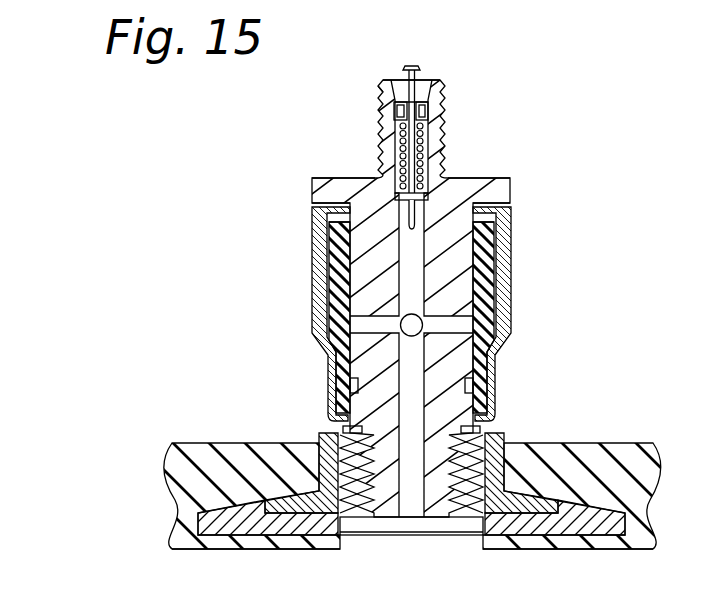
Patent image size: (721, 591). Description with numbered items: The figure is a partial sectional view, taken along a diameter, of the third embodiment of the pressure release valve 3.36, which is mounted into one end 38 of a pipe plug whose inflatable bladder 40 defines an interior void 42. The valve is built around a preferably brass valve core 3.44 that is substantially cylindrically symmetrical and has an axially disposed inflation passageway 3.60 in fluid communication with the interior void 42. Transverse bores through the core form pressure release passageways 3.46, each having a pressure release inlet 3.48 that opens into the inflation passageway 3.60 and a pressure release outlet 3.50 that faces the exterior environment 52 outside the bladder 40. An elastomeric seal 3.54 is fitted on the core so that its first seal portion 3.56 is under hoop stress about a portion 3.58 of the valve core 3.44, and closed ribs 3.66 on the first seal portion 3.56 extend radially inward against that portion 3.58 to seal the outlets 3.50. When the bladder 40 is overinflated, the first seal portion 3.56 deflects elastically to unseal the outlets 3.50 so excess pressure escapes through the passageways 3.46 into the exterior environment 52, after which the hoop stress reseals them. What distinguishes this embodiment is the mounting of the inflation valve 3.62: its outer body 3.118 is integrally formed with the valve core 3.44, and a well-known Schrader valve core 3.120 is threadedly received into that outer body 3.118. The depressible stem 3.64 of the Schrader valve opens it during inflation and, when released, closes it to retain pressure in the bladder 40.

The end of the plug 38 is at (600, 470).
The inflatable bladder 40 is at (565, 540).
The interior void 42 is at (262, 587).
The exterior environment 52 is at (588, 106).
The pressure release valve 3.36 is at (538, 321).
The valve core 3.44 is at (452, 268).
The pressure release passageway 3.46 is at (345, 352).
The pressure release inlet 3.48 is at (347, 397).
The pressure release outlet 3.50 is at (335, 300).
The elastomeric seal 3.54 is at (472, 218).
The first seal portion 3.56 is at (338, 282).
The portion of the valve core 3.58 is at (357, 242).
The inflation passageway 3.60 is at (415, 242).
The inflation valve 3.62 is at (472, 80).
The depressible stem 3.64 is at (413, 66).
The closed ribs 3.66 is at (376, 252).
The outer body 3.118 is at (398, 116).
The Schrader valve core 3.120 is at (410, 137).